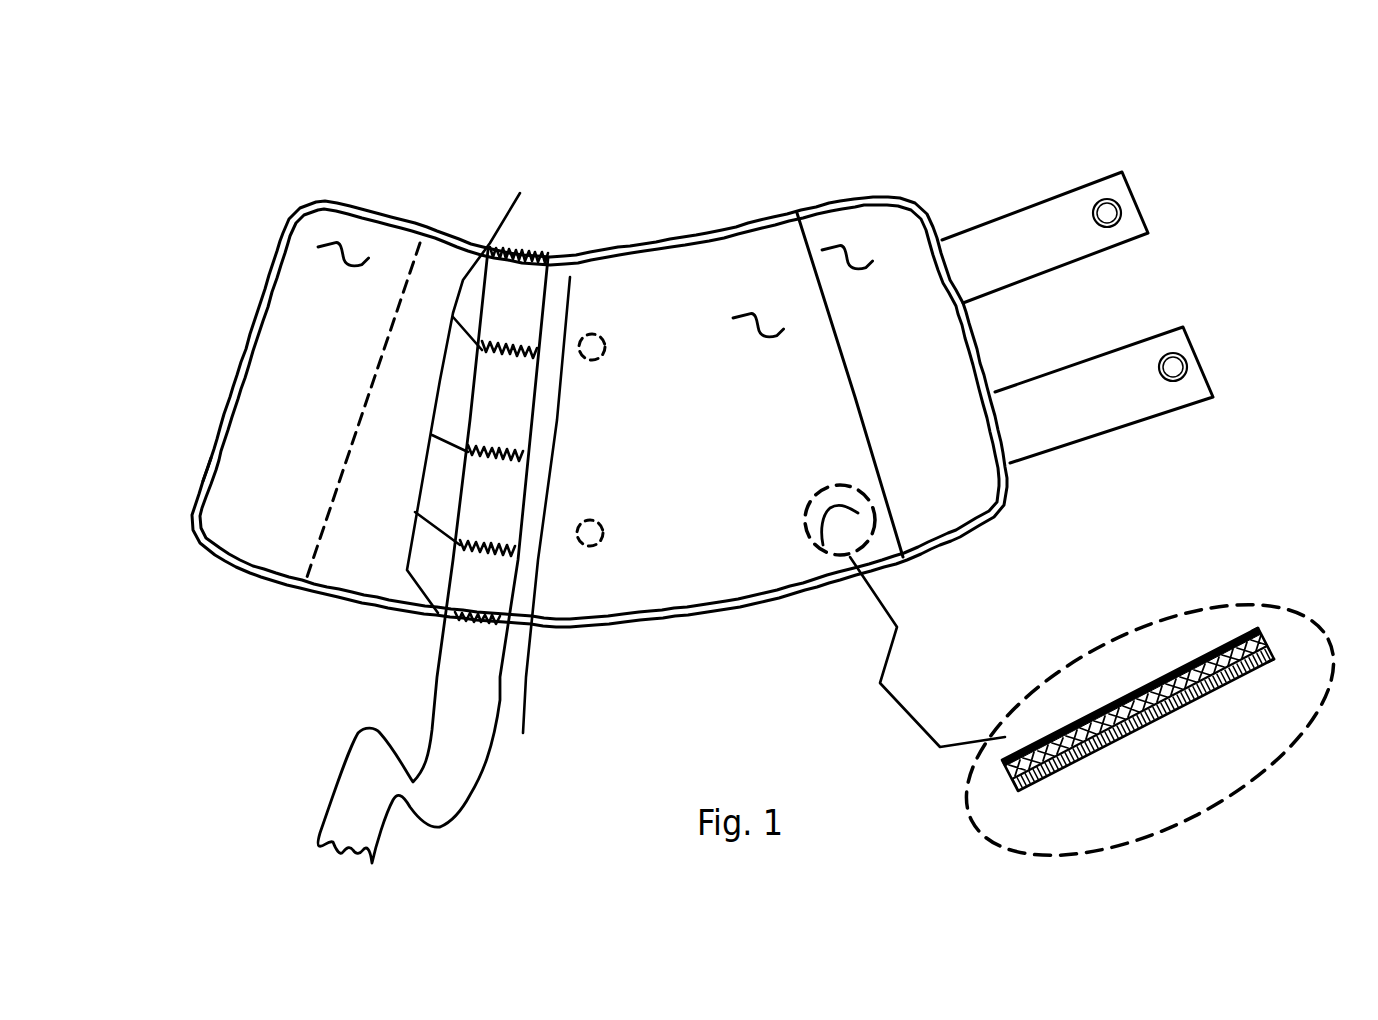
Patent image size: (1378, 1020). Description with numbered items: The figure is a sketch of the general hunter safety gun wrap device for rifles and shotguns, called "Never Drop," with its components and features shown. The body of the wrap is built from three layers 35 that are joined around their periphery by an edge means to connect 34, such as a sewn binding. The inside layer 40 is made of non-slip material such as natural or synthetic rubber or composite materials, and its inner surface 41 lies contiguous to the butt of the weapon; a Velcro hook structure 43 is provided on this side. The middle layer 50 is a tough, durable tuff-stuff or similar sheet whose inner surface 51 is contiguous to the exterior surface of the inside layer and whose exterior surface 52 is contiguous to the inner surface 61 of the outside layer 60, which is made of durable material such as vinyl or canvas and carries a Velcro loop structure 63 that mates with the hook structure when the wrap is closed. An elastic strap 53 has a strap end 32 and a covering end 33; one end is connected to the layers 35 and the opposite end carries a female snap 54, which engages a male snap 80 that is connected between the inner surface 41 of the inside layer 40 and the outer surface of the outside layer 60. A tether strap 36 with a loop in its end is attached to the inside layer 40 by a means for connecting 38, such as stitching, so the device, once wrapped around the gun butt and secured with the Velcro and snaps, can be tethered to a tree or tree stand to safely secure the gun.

The strap end 32 is at (930, 215).
The covering end 33 is at (206, 468).
The edge means to connect 34 is at (228, 393).
The layers 35 is at (833, 513).
The tether strap 36 is at (450, 767).
The means for connecting 38 is at (520, 193).
The inside layer 40 is at (1002, 762).
The inner surface 41 is at (755, 312).
The Velcro hook structure 43 is at (846, 248).
The middle layer 50 is at (1010, 777).
The inner surface of middle layer 51 is at (1258, 629).
The exterior surface of middle layer 52 is at (1260, 652).
The elastic strap 53 is at (1047, 252).
The female snap 54 is at (1253, 367).
The outside layer 60 is at (1020, 793).
The inner surface of outside layer 61 is at (1188, 703).
The Velcro loop structure 63 is at (346, 238).
The male snap 80 is at (592, 338).